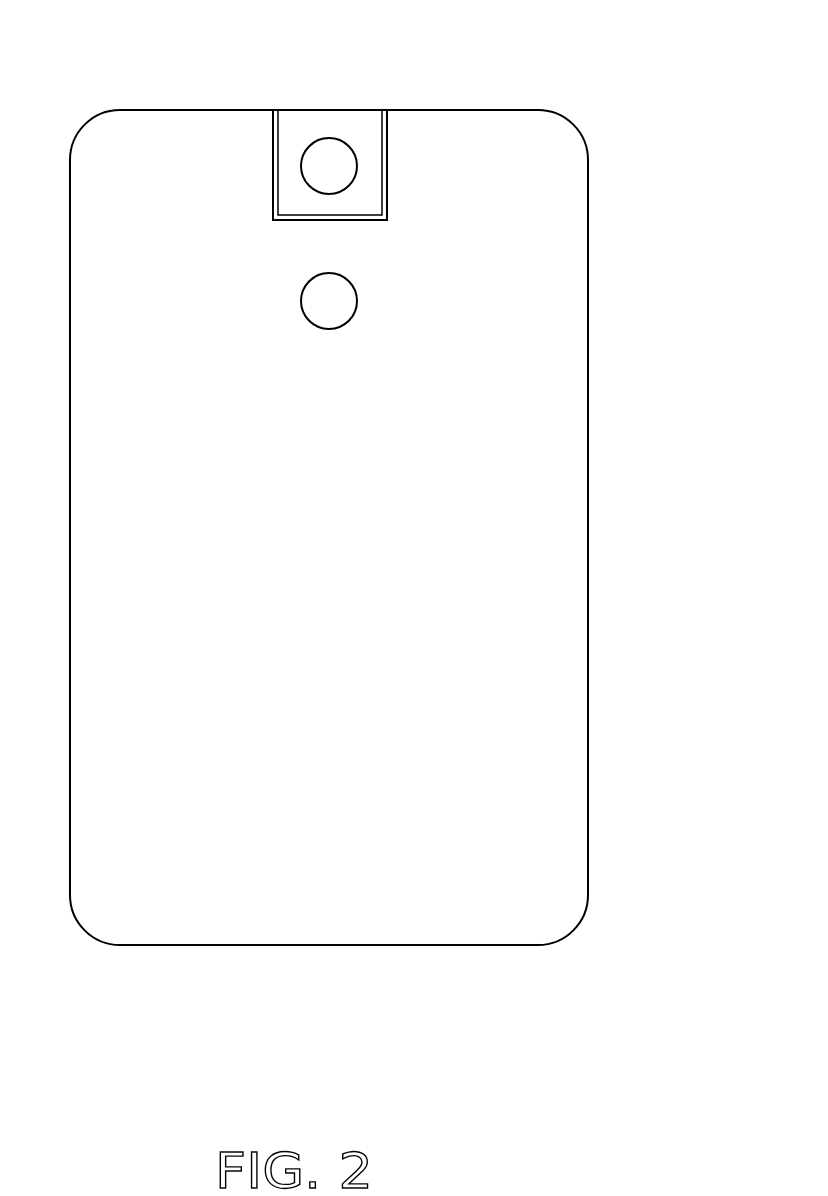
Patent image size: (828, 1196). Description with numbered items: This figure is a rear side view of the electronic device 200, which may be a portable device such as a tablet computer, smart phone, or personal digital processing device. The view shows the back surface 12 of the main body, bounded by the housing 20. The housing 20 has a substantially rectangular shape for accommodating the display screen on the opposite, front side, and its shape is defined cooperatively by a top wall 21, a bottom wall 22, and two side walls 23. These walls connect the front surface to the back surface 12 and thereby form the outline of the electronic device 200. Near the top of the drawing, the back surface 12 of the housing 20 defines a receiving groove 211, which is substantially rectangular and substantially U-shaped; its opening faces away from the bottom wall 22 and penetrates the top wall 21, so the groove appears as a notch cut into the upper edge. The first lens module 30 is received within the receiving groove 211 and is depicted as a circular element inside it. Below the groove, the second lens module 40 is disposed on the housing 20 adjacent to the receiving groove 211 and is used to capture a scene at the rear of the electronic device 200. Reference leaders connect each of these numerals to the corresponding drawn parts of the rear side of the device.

The electronic device 200 is at (370, 515).
The housing 20 is at (573, 150).
The top wall 21 is at (200, 110).
The bottom wall 22 is at (305, 945).
The side walls 23 is at (588, 433).
The back surface 12 is at (565, 342).
The receiving groove 211 is at (387, 148).
The first lens module 30 is at (329, 165).
The second lens module 40 is at (329, 301).